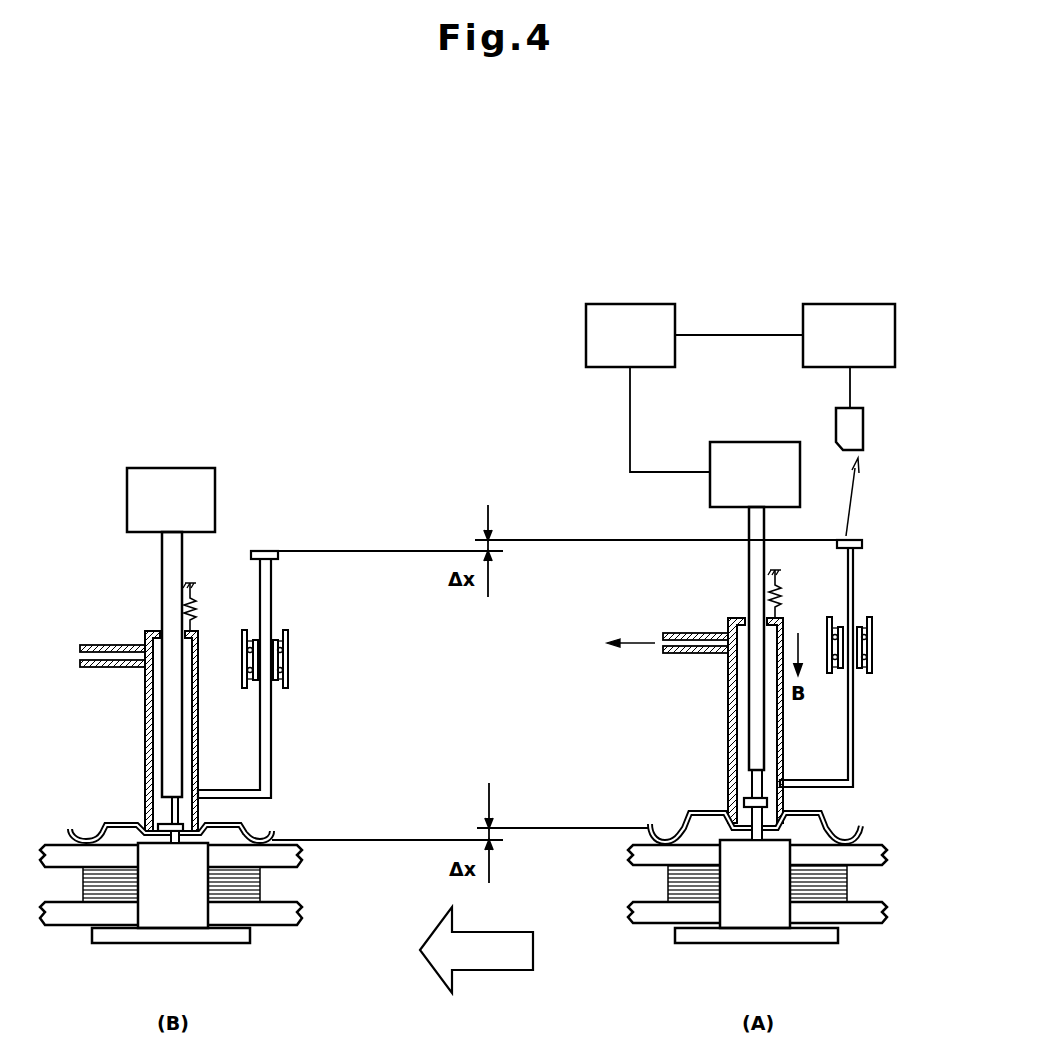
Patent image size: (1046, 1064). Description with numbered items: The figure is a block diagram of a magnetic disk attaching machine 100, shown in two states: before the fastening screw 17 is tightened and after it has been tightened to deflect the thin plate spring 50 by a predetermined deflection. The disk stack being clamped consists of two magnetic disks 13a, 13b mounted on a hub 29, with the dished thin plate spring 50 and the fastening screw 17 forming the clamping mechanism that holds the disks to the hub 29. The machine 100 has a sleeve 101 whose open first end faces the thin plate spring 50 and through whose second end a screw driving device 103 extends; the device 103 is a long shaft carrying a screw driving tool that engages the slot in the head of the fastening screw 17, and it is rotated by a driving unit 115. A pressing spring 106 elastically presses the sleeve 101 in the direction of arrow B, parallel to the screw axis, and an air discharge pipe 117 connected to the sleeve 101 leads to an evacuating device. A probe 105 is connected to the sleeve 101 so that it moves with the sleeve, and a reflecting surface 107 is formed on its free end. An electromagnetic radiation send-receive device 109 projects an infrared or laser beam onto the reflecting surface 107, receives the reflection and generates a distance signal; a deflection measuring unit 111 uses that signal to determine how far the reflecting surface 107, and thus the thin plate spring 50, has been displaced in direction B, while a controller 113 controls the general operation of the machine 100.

The magnetic disk attaching machine 100 is at (561, 599).
The controller 113 is at (640, 304).
The deflection measuring unit 111 is at (850, 304).
The electromagnetic radiation send-receive device 109 is at (866, 423).
The driving unit 115 is at (756, 442).
The reflecting surface 107 is at (863, 544).
The probe 105 is at (855, 707).
The screw driving device 103 is at (766, 712).
The sleeve 101 is at (728, 712).
The air discharge pipe 117 is at (700, 633).
The pressing spring 106 is at (782, 592).
The fastening screw 17 is at (783, 790).
The thin plate spring 50 is at (698, 803).
The magnetic disk 13a is at (888, 856).
The magnetic disk 13b is at (888, 913).
The hub 29 is at (758, 910).